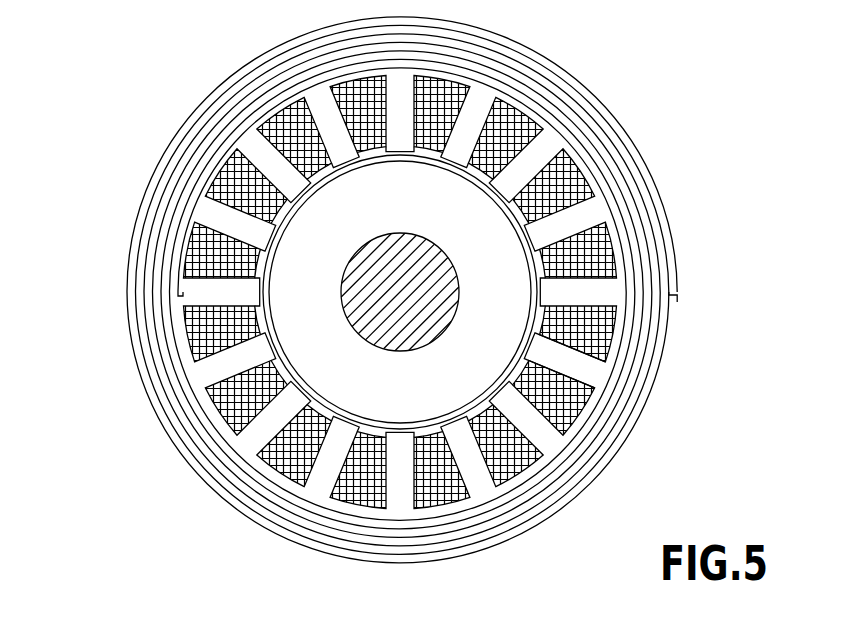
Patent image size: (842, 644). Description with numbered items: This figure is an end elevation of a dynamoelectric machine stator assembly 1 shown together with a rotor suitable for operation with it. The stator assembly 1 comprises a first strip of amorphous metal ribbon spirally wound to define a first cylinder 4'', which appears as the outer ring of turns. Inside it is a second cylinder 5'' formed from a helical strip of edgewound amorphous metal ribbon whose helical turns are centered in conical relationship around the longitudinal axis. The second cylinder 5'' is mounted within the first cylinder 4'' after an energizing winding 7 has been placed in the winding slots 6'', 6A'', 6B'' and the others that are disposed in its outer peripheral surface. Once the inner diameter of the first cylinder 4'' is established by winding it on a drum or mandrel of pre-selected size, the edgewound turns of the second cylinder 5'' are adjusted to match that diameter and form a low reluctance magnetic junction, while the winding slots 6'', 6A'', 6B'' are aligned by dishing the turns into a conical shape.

The stator assembly 1 is at (104, 244).
The first cylinder 4'' is at (402, 290).
The second cylinder 5'' is at (564, 360).
The winding slot 6'' is at (400, 338).
The winding slot 6A'' is at (349, 514).
The winding slot 6B'' is at (442, 515).
The energizing winding 7 is at (576, 262).